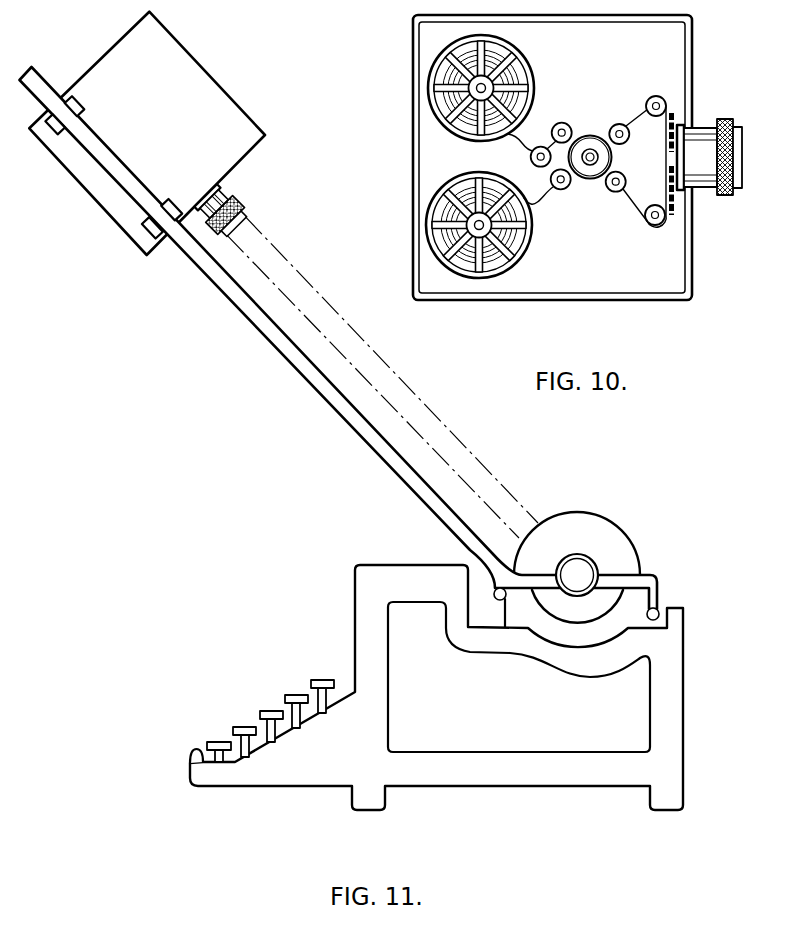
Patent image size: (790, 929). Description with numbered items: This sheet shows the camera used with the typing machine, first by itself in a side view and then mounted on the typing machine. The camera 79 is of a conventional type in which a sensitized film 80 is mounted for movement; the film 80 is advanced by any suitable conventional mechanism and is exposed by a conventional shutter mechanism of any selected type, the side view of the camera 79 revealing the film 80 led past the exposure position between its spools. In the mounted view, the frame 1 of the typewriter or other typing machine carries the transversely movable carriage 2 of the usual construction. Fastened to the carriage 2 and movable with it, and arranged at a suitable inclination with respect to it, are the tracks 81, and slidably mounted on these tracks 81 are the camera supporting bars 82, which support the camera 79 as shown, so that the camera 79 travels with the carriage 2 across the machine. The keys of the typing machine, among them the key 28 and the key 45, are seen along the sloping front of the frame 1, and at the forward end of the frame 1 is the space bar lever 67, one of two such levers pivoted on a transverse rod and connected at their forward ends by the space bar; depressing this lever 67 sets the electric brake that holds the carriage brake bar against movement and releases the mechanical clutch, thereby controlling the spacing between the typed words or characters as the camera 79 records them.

In FIG. 11, the frame 1 is at (357, 643).
In FIG. 11, the carriage 2 is at (654, 574).
In FIG. 11, the control key 28 is at (283, 716).
In FIG. 11, the control key 45 is at (235, 738).
In FIG. 11, the space bar lever 67 is at (198, 762).
In FIG. 10, the camera 79 is at (413, 165).
In FIG. 11, the camera 79 is at (208, 92).
In FIG. 10, the sensitized film 80 is at (635, 197).
In FIG. 11, the tracks 81 is at (249, 323).
In FIG. 11, the camera supporting bars 82 is at (76, 100).